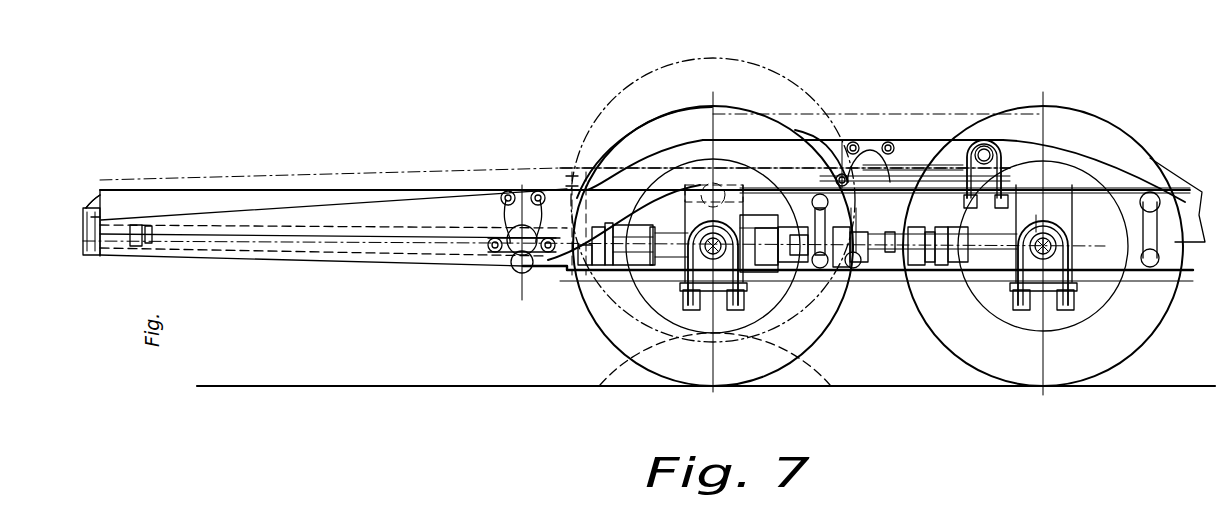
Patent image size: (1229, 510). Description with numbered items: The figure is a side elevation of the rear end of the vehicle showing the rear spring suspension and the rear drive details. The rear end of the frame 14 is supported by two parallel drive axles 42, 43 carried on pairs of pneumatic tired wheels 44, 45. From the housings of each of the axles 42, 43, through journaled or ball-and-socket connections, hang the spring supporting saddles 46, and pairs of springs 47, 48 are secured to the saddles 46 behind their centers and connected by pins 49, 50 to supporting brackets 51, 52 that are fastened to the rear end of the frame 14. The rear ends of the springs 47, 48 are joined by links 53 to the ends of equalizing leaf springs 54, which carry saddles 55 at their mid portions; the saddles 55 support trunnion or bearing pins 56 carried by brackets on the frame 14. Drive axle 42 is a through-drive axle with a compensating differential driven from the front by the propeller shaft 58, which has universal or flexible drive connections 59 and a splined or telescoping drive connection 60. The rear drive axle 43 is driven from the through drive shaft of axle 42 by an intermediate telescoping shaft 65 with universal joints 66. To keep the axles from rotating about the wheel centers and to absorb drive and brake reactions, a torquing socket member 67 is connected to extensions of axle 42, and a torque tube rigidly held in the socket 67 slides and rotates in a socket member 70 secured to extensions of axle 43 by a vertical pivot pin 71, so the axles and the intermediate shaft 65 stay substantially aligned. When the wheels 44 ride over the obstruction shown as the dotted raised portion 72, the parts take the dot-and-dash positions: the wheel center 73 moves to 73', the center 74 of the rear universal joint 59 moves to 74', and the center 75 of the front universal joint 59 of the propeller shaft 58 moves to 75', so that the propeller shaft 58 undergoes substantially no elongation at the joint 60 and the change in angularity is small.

The frame 14 is at (252, 190).
The drive axle 42 is at (688, 233).
The rear drive axle 43 is at (1062, 244).
The pneumatic tired wheels 44 is at (725, 107).
The pneumatic tired wheels 45 is at (1122, 140).
The spring supporting saddles 46 is at (742, 208).
The springs 47 is at (578, 284).
The springs 48 is at (895, 280).
The pin 49 is at (518, 269).
The pin 50 is at (840, 276).
The supporting bracket 51 is at (515, 223).
The supporting bracket 52 is at (880, 226).
The links 53 is at (802, 214).
The equalizing leaf springs 54 is at (930, 178).
The saddles 55 is at (1016, 140).
The trunnion or bearing pins 56 is at (985, 136).
The propeller shaft 58 is at (326, 236).
The universal or flexible drive connections 59 is at (91, 216).
The splined or telescoping drive connection 60 is at (152, 226).
The intermediate telescoping or splined shaft 65 is at (855, 270).
The universal or flexible joints 66 is at (925, 235).
The torquing socket member 67 is at (773, 283).
The socket member 70 is at (955, 287).
The vertical pivot pin 71 is at (993, 293).
The dotted raised portion 72 is at (648, 352).
The center of the wheel 73 is at (713, 246).
The shifted wheel center position 73' is at (785, 171).
The center of the universal joint 74 is at (562, 240).
The shifted universal joint center position 74' is at (549, 162).
The center of the front universal joint 75 is at (120, 246).
The shifted front universal joint center position 75' is at (115, 163).